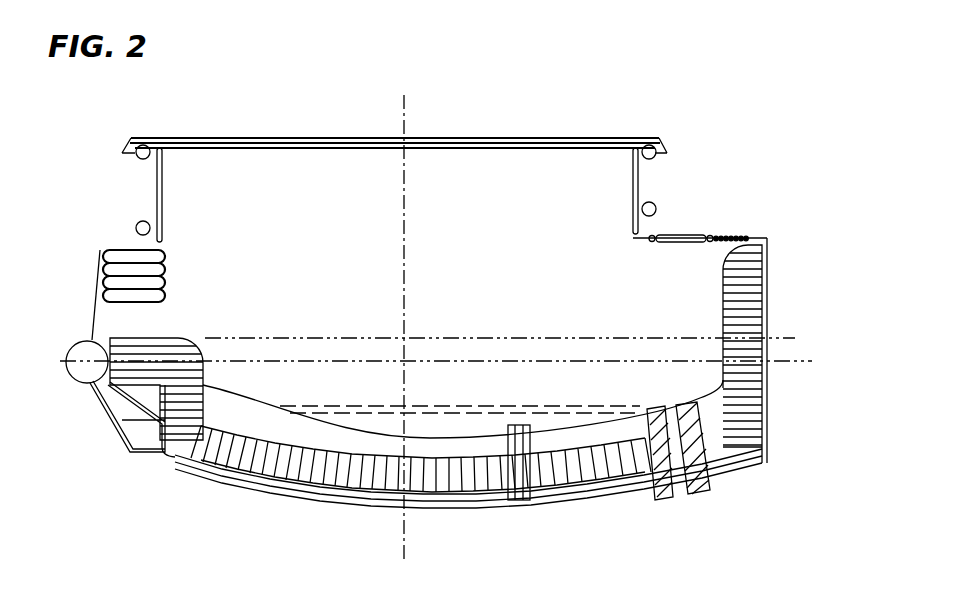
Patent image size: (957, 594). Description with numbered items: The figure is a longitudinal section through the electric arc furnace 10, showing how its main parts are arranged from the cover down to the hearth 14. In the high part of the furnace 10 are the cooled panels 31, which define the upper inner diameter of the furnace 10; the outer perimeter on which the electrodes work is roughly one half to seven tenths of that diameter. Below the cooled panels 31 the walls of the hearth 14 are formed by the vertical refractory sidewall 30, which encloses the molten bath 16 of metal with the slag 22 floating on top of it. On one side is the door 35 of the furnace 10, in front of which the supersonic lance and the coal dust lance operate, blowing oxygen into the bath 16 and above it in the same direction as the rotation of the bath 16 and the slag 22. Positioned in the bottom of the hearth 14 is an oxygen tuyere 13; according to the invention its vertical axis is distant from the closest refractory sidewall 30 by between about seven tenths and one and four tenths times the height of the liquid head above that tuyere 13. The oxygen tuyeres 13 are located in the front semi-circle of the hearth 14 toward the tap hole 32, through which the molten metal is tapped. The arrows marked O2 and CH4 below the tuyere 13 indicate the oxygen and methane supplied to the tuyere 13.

The electric arc furnace 10 is at (337, 118).
The cooled panels 31 is at (163, 185).
The door 35 is at (88, 265).
The slag 22 is at (232, 342).
The molten bath 16 is at (280, 362).
The refractory sidewall 30 is at (748, 422).
The hearth 14 is at (307, 470).
The oxygen tuyere 13 is at (508, 442).
The tap hole 32 is at (683, 504).
The oxygen supply O2 is at (522, 504).
The methane supply CH4 is at (533, 504).